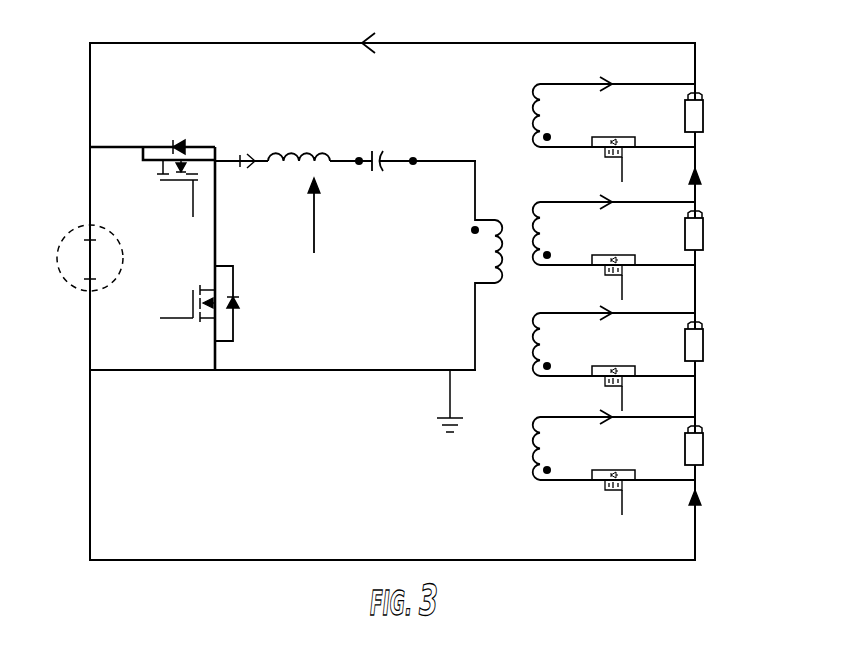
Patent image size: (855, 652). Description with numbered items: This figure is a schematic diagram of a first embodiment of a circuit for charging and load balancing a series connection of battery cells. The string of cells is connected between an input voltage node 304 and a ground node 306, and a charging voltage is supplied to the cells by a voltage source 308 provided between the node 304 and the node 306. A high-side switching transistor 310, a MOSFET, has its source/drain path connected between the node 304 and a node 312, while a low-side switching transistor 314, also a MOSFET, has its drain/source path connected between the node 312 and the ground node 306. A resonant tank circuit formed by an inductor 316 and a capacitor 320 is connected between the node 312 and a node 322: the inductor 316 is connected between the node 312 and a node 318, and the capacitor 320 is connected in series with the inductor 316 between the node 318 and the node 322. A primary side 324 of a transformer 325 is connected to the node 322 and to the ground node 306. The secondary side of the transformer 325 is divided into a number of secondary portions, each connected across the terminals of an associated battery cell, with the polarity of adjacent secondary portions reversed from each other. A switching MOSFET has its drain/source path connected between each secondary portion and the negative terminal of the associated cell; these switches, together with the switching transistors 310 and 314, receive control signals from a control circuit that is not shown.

The node 304 is at (88, 147).
The node 306 is at (88, 370).
The voltage source 308 is at (68, 247).
The high-side switching transistor 310 is at (178, 184).
The node 312 is at (217, 160).
The low-side switching transistor 314 is at (236, 321).
The inductor 316 is at (326, 155).
The node 318 is at (360, 155).
The capacitor 320 is at (382, 169).
The node 322 is at (415, 155).
The primary side 324 is at (452, 270).
The transformer 325 is at (503, 213).